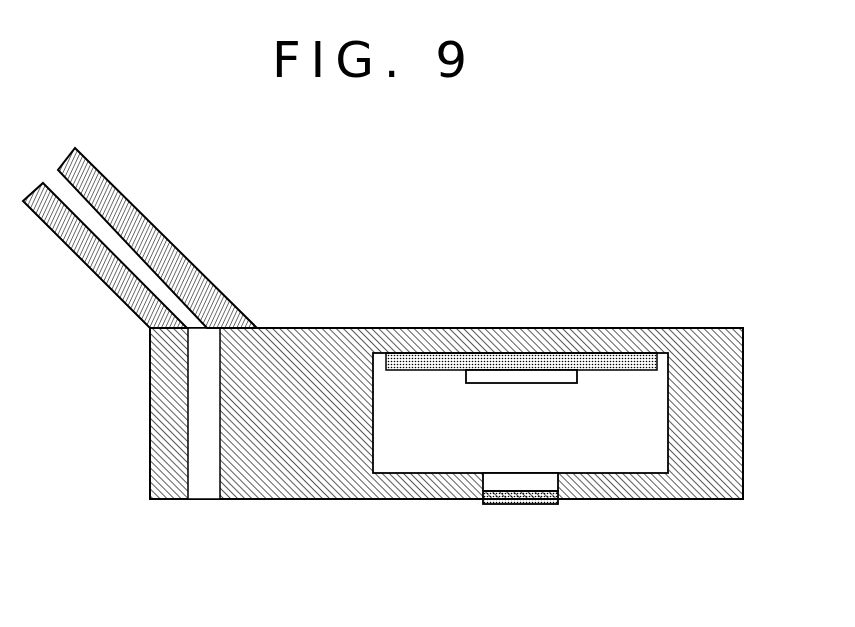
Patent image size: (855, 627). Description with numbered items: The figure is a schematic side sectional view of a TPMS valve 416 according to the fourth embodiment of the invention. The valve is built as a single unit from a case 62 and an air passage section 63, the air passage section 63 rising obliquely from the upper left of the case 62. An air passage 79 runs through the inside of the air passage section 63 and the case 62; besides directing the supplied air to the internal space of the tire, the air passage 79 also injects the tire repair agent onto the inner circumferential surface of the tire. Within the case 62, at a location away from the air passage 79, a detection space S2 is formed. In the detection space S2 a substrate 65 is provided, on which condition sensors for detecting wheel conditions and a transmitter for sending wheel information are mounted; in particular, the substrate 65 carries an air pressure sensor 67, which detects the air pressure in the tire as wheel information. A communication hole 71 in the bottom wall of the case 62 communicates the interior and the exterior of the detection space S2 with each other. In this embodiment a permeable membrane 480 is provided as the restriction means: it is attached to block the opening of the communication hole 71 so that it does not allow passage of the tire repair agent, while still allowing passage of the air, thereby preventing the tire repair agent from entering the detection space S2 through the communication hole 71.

The TPMS valve 416 is at (622, 230).
The case 62 is at (697, 328).
The air passage section 63 is at (117, 187).
The air passage 79 is at (118, 258).
The substrate 65 is at (530, 362).
The air pressure sensor 67 is at (486, 376).
The detection space S2 is at (658, 412).
The communication hole 71 is at (484, 497).
The permeable membrane 480 is at (518, 504).